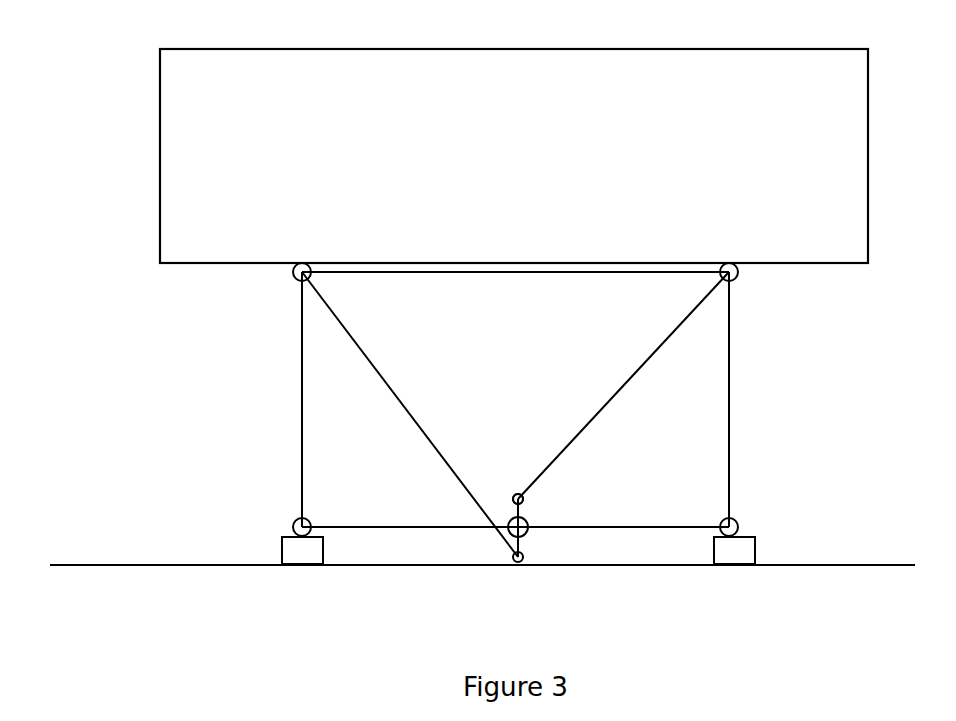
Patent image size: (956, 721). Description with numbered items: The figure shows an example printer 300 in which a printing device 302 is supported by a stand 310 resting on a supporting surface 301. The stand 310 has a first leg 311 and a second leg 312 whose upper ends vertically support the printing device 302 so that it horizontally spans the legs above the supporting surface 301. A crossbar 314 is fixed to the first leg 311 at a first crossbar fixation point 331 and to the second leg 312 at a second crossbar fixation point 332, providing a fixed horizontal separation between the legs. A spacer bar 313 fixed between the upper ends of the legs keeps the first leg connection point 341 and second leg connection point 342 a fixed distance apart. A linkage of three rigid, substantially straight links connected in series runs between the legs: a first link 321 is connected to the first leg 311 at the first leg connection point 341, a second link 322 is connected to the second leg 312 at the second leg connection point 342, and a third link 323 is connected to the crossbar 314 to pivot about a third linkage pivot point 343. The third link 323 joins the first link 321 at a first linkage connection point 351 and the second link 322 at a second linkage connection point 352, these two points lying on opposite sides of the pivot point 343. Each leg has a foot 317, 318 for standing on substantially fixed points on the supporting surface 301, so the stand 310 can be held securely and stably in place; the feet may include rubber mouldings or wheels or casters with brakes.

The printer 300 is at (107, 56).
The supporting surface 301 is at (515, 632).
The printing device 302 is at (533, 172).
The stand 310 is at (180, 385).
The first leg 311 is at (300, 430).
The second leg 312 is at (730, 377).
The spacer bar 313 is at (470, 273).
The crossbar 314 is at (367, 527).
The foot 317 is at (282, 556).
The foot 318 is at (756, 552).
The first link 321 is at (365, 355).
The second link 322 is at (622, 386).
The third link 323 is at (516, 505).
The first crossbar fixation point 331 is at (292, 523).
The second crossbar fixation point 332 is at (739, 521).
The first leg connection point 341 is at (293, 278).
The second leg connection point 342 is at (738, 272).
The third linkage pivot point 343 is at (528, 522).
The first linkage connection point 351 is at (524, 557).
The second linkage connection point 352 is at (518, 493).